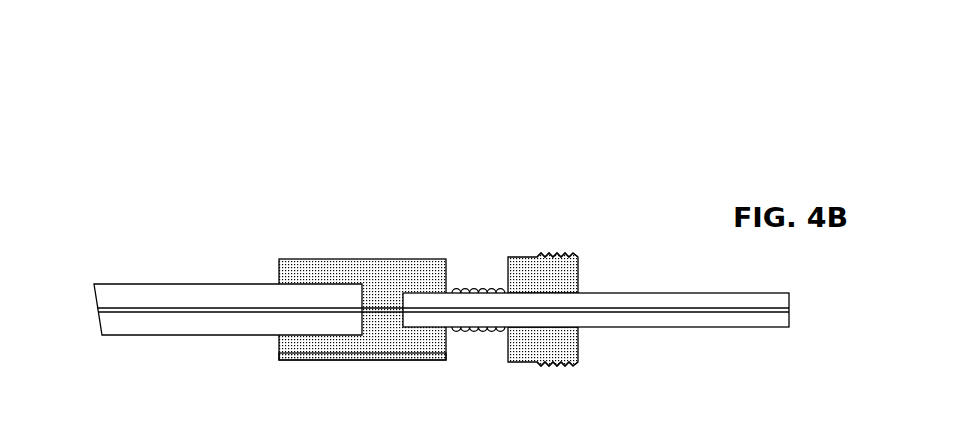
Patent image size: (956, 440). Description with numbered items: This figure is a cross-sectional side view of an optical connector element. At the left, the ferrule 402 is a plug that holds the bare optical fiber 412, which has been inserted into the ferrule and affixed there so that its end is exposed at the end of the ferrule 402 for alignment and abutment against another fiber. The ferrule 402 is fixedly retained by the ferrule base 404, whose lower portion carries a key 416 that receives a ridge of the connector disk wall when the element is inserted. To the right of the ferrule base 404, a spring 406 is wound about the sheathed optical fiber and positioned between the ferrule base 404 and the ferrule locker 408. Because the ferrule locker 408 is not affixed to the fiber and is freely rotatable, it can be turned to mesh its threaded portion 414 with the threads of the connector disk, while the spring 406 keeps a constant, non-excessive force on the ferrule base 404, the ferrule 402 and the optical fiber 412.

The ferrule 402 is at (128, 284).
The optical fiber 412 is at (185, 308).
The ferrule base 404 is at (328, 259).
The key 416 is at (395, 360).
The spring 406 is at (463, 291).
The ferrule locker 408 is at (521, 268).
The threaded portion 414 is at (564, 257).